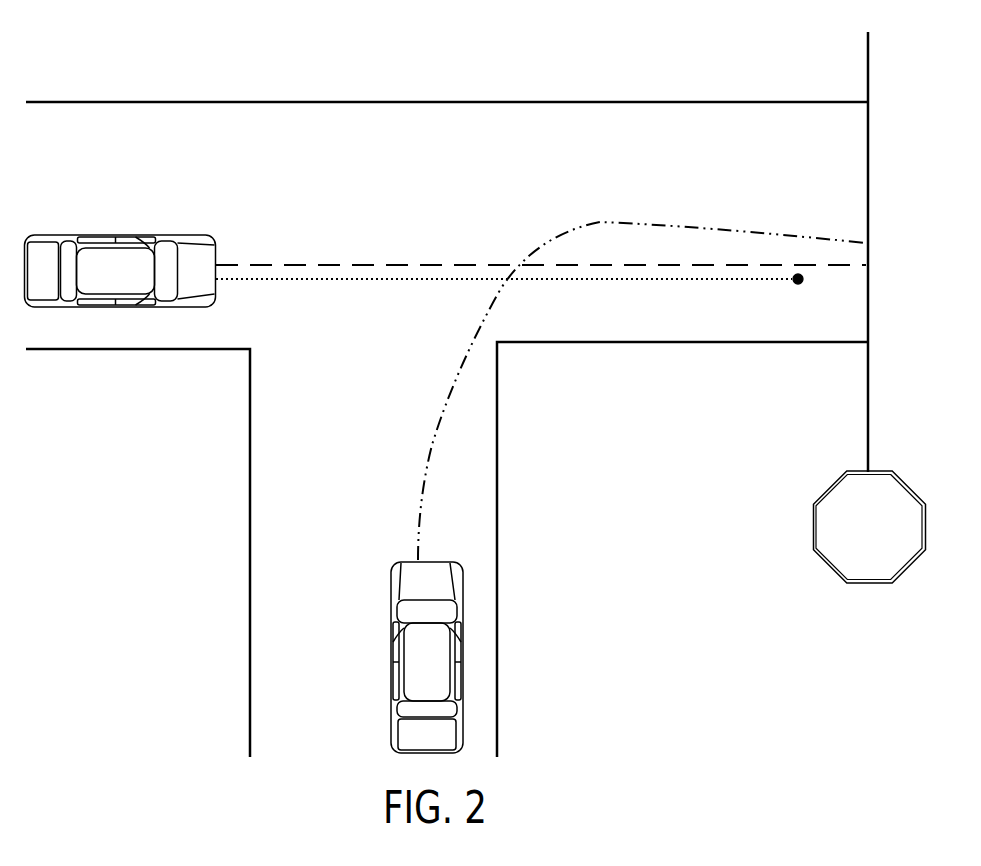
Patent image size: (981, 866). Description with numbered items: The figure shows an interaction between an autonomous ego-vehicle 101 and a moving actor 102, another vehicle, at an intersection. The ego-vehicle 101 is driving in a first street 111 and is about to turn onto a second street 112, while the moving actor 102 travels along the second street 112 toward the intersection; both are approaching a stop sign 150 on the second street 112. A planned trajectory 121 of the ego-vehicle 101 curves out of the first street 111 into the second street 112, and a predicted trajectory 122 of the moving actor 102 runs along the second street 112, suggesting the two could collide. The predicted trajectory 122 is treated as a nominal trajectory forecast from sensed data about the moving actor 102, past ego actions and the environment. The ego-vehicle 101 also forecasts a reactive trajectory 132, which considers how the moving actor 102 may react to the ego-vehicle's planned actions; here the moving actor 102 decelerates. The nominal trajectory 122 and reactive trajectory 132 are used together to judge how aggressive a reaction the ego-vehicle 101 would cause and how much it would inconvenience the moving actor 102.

The ego-vehicle 101 is at (463, 656).
The moving actor 102 is at (100, 234).
The first street 111 is at (249, 498).
The second street 112 is at (233, 101).
The planned trajectory 121 is at (432, 425).
The predicted trajectory 122 is at (336, 262).
The reactive trajectory 132 is at (333, 282).
The stop sign 150 is at (865, 584).